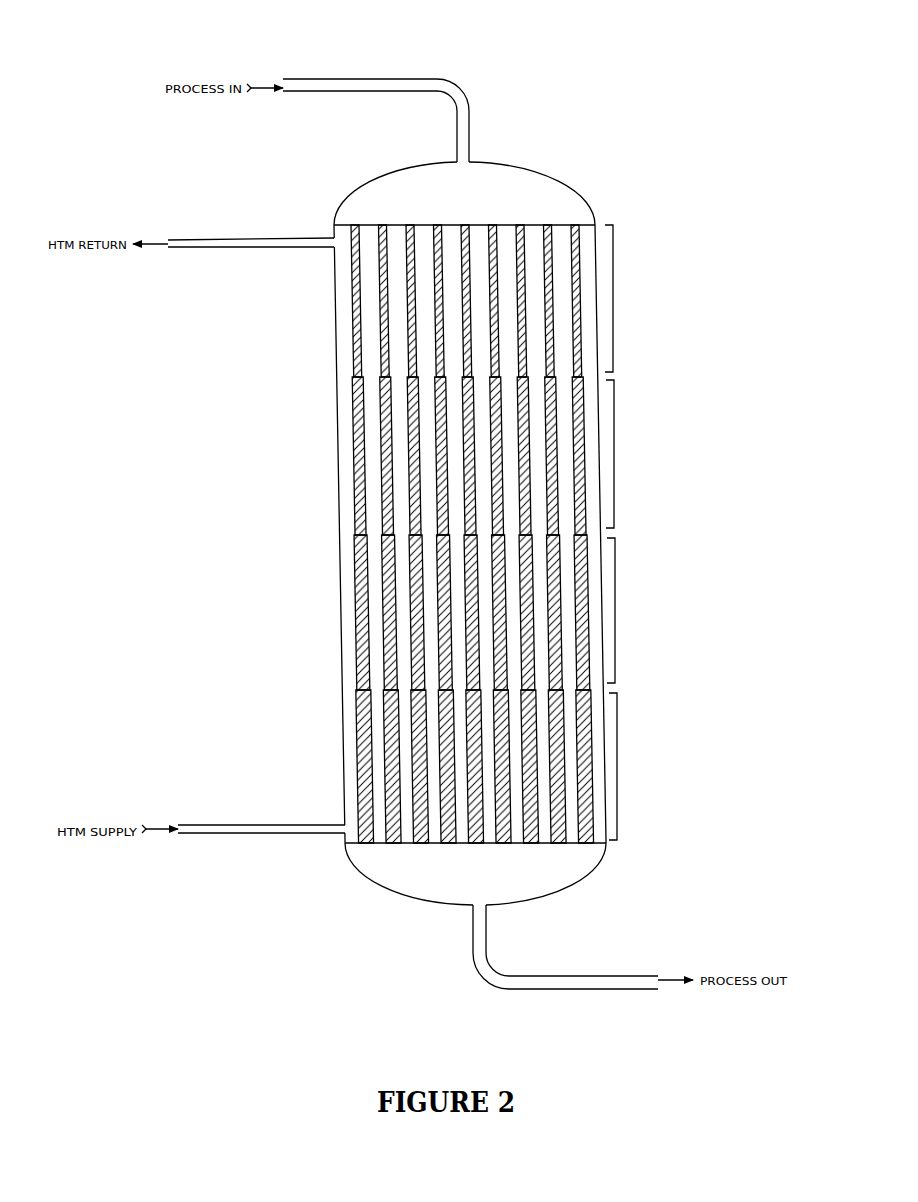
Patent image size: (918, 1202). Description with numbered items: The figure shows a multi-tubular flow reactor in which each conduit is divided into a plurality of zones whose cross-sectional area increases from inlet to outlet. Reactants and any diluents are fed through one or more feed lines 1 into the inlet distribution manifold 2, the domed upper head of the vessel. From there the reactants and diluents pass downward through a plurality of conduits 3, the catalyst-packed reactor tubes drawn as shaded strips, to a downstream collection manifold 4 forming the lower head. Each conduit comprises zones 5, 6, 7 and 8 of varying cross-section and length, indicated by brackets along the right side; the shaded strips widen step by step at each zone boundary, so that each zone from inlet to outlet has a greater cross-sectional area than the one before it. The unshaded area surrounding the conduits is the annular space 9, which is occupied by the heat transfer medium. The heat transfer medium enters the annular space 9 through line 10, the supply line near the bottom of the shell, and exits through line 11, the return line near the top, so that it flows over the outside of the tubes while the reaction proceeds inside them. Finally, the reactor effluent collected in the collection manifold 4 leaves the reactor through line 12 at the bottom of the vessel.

The feed line 1 is at (376, 88).
The inlet distribution manifold 2 is at (464, 180).
The conduits 3 is at (438, 534).
The downstream collection manifold 4 is at (475, 896).
The zone 5 is at (613, 302).
The zone 6 is at (614, 458).
The zone 7 is at (615, 622).
The zone 8 is at (617, 770).
The annular space 9 is at (446, 534).
The line 10 is at (261, 856).
The line 11 is at (251, 216).
The line 12 is at (565, 947).